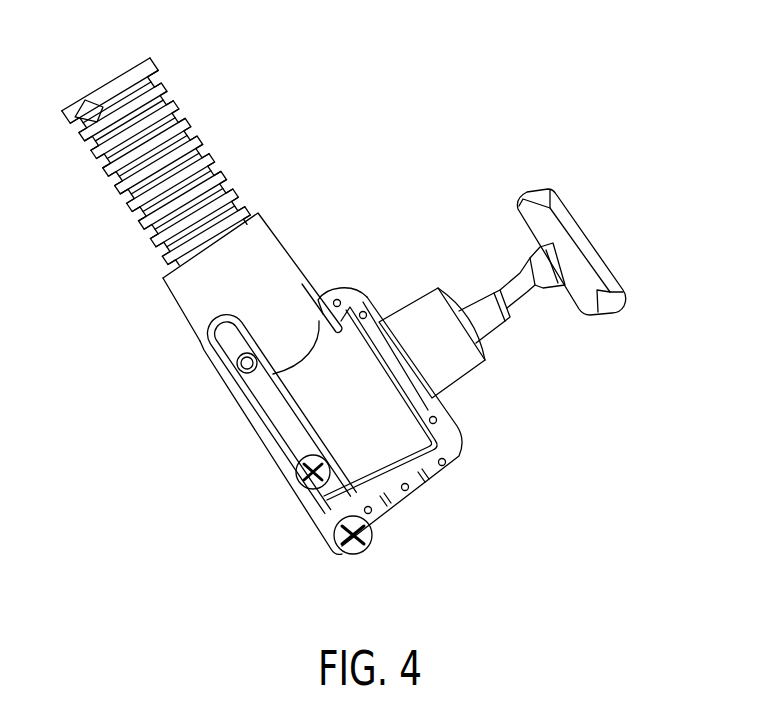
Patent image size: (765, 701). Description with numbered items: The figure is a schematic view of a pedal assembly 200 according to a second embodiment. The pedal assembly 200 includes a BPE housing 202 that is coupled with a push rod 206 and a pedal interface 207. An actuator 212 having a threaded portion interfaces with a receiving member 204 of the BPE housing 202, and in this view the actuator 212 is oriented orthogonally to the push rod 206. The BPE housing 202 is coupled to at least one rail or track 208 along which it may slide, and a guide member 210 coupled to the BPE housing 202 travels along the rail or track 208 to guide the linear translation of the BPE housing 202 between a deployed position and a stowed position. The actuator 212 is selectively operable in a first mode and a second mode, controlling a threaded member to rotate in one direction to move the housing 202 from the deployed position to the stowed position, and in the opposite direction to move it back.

The pedal assembly 200 is at (579, 70).
The BPE housing 202 is at (350, 410).
The receiving member 204 is at (217, 272).
The push rod 206 is at (487, 313).
The pedal interface 207 is at (580, 222).
The rail or track 208 is at (316, 518).
The guide member 210 is at (296, 468).
The actuator 212 is at (127, 207).